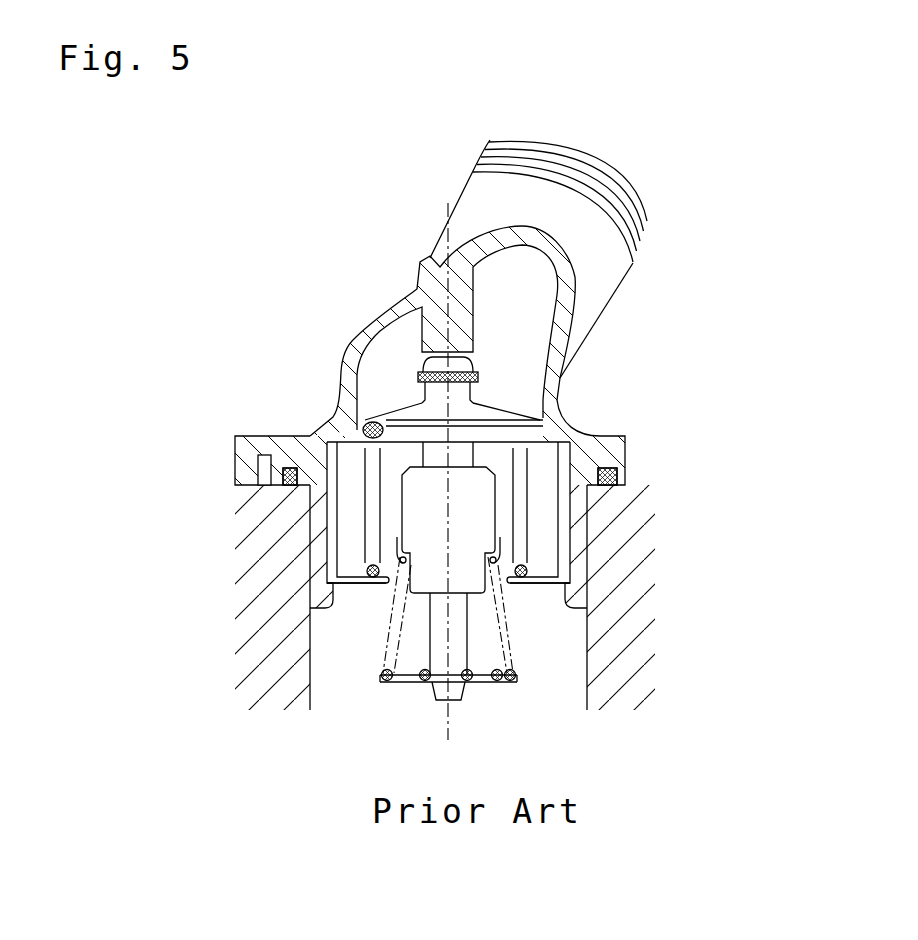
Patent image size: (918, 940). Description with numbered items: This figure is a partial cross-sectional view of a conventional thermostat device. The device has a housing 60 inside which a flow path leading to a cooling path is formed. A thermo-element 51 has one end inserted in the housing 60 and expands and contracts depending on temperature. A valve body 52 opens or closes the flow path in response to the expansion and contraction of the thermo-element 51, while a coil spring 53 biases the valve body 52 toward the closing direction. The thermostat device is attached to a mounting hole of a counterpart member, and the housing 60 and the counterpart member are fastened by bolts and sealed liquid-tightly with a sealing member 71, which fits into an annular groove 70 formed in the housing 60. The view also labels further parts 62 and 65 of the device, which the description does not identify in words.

The housing 60 is at (355, 337).
The valve body 52 is at (517, 437).
The sealing member 71 is at (616, 472).
The annular groove 70 is at (615, 484).
The coil spring 53 is at (513, 573).
The thermo-element 51 is at (462, 573).
The housing wall 62 is at (318, 528).
The spring cup 65 is at (357, 587).